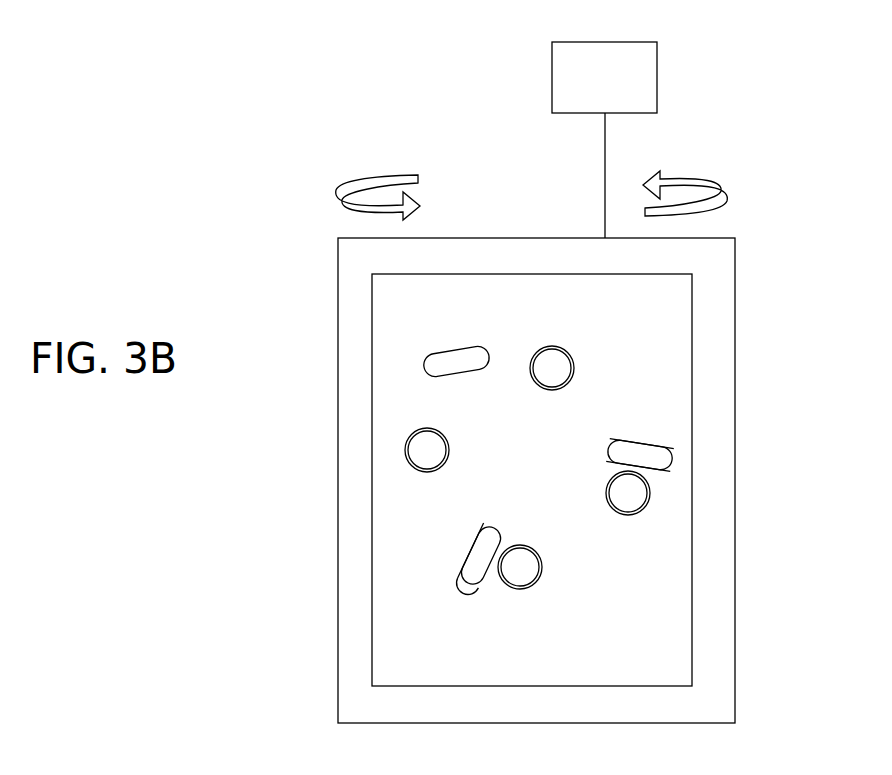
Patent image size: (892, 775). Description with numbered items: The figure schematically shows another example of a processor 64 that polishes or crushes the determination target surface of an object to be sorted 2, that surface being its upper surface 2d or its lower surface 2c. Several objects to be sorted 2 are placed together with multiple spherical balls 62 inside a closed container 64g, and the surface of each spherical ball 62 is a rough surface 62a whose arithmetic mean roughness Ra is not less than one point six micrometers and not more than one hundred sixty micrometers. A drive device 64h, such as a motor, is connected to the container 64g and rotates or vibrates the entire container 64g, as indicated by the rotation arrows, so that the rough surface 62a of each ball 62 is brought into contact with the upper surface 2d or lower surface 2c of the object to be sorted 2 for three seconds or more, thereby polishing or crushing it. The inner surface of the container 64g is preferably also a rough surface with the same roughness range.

The object to be sorted 2 is at (435, 367).
The lower surface 2c is at (640, 441).
The upper surface 2d is at (655, 470).
The spherical ball 62 is at (422, 448).
The rough surface 62a is at (410, 474).
The processor 64 is at (518, 232).
The container 64g is at (335, 326).
The drive device 64h is at (623, 78).